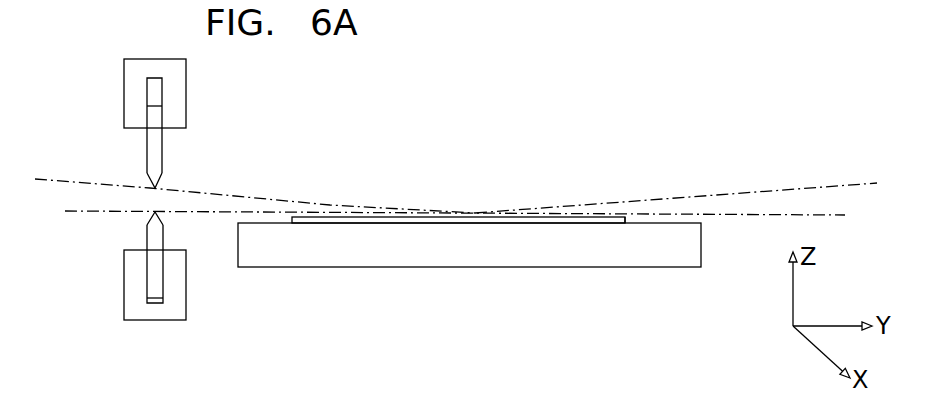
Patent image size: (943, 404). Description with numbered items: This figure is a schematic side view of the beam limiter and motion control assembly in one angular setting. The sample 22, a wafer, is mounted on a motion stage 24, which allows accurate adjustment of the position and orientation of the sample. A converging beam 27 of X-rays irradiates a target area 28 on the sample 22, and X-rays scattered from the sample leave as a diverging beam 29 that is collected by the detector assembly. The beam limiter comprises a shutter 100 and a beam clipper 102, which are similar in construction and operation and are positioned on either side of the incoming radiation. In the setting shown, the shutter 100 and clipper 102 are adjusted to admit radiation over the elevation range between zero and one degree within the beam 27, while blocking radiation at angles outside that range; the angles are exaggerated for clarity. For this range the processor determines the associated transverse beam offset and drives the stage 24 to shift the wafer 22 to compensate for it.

The sample 22 is at (636, 222).
The motion stage 24 is at (701, 241).
The converging beam 27 is at (255, 186).
The target area 28 is at (448, 217).
The diverging beam 29 is at (676, 184).
The shutter 100 is at (162, 214).
The beam clipper 102 is at (155, 155).